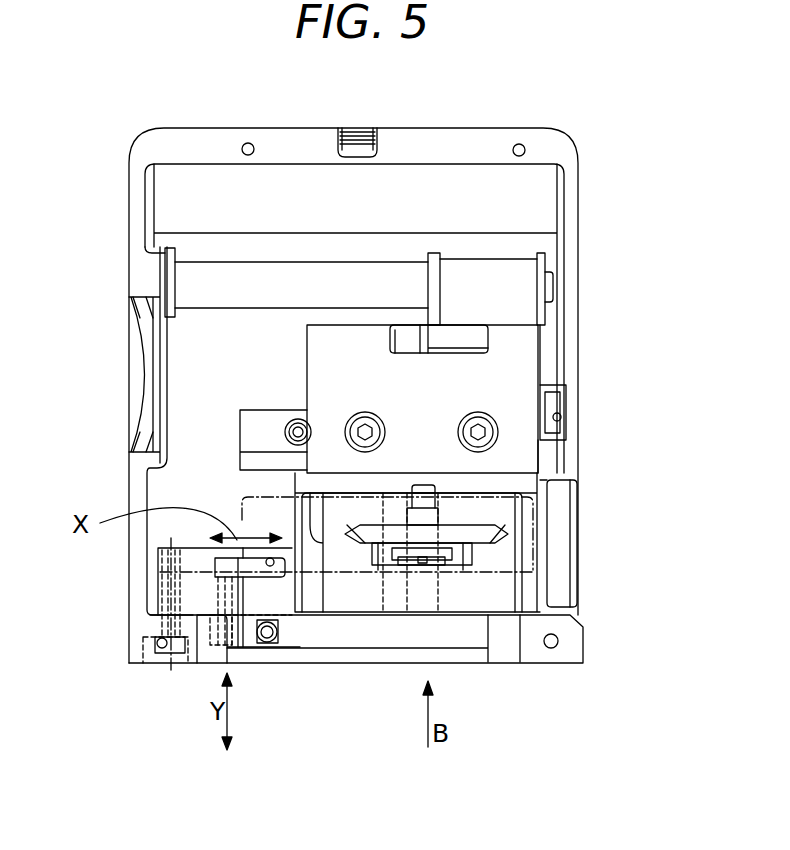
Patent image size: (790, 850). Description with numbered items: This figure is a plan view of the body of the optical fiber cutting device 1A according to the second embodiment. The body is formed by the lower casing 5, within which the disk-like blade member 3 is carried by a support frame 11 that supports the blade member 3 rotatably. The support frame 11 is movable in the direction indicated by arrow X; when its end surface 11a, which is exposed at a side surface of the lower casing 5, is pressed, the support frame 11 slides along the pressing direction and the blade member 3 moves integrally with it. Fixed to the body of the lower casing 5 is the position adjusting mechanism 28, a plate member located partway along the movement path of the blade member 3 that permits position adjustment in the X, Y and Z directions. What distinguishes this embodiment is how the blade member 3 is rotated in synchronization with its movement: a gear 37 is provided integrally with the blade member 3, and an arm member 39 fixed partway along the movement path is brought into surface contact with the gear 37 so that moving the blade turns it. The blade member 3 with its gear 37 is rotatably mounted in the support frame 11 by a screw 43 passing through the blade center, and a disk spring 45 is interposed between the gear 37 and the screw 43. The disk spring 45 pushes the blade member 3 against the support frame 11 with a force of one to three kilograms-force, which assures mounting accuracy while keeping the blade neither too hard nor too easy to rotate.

The optical fiber cutting device 1A is at (617, 136).
The lower casing 5 is at (579, 285).
The disk-like blade member 3 is at (468, 520).
The support frame 11 is at (532, 513).
The end surface 11a is at (578, 547).
The position adjusting mechanism 28 is at (193, 600).
The arm member 39 is at (248, 565).
The gear 37 is at (377, 557).
The disk spring 45 is at (412, 563).
The screw 43 is at (435, 562).